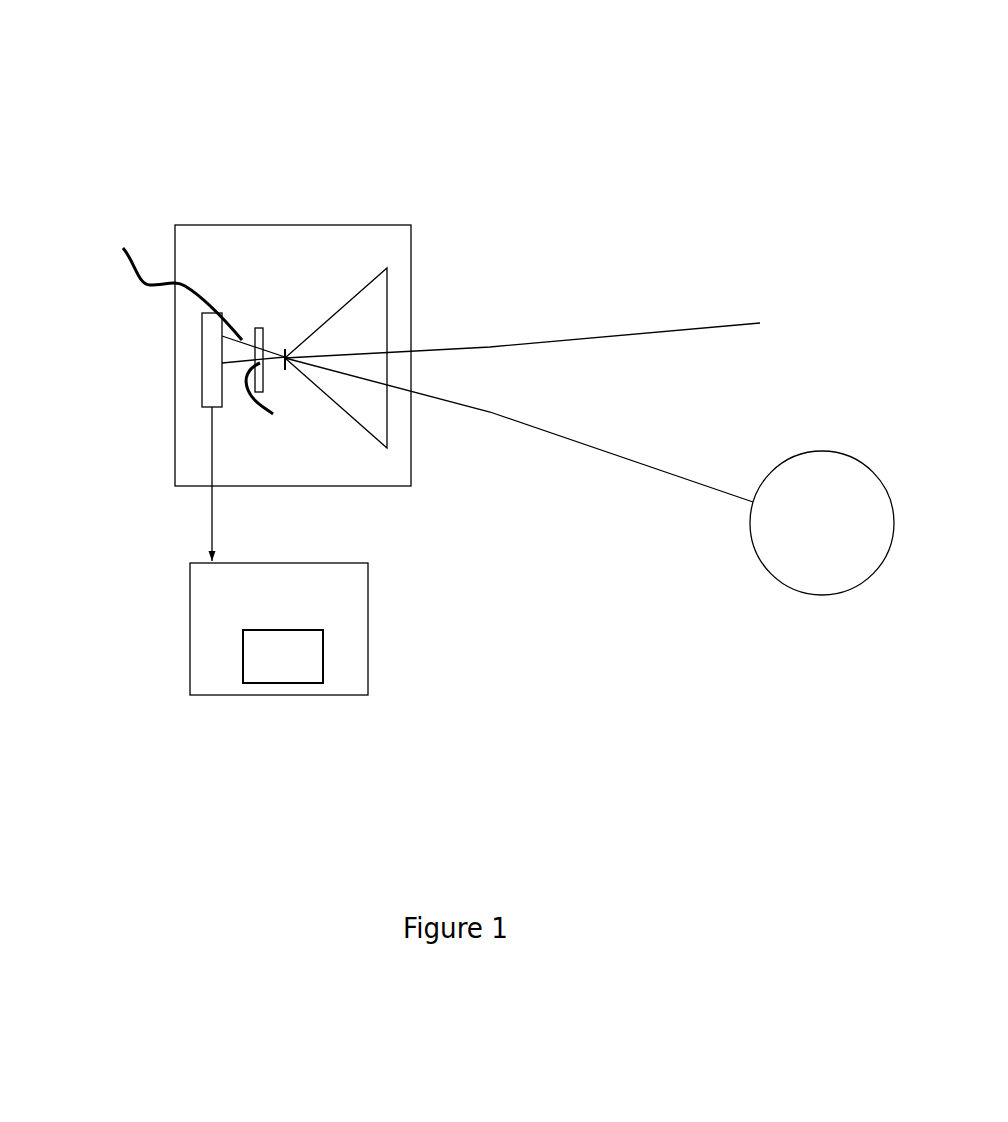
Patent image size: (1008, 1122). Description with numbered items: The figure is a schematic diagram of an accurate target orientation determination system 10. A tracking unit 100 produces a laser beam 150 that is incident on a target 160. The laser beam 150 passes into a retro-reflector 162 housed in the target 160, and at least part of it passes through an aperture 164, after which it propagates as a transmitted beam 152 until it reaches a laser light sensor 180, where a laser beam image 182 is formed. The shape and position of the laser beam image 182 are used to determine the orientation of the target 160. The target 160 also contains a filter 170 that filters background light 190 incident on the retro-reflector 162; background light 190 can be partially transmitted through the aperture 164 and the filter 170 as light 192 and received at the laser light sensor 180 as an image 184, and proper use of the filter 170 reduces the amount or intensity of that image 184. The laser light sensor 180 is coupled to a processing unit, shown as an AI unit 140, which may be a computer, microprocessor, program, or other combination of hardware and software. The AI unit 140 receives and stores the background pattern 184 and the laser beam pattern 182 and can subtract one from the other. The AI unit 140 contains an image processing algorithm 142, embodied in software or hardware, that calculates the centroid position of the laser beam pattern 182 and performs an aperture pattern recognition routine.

The accurate target orientation determination system 10 is at (440, 82).
The tracking unit 100 is at (823, 450).
The AI unit 140 is at (370, 633).
The image processing algorithm 142 is at (283, 656).
The laser beam 150 is at (558, 432).
The transmitted beam 152 is at (285, 401).
The target 160 is at (173, 474).
The retro-reflector 162 is at (388, 308).
The aperture 164 is at (285, 350).
The filter 170 is at (257, 325).
The laser light sensor 180 is at (198, 398).
The laser beam image 182 is at (215, 363).
The image 184 is at (213, 335).
The background light 190 is at (680, 328).
The light 192 is at (155, 289).